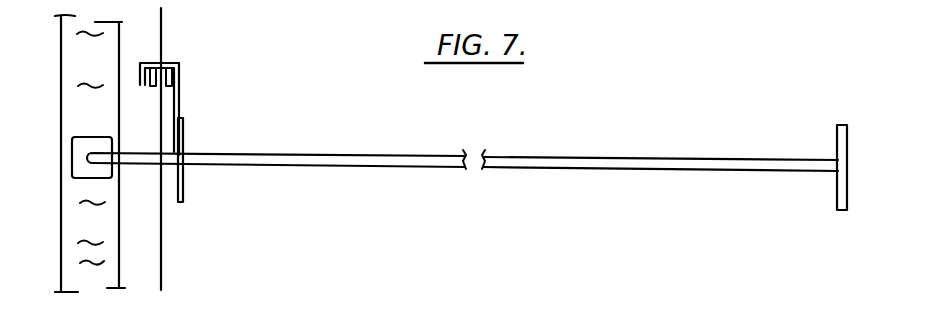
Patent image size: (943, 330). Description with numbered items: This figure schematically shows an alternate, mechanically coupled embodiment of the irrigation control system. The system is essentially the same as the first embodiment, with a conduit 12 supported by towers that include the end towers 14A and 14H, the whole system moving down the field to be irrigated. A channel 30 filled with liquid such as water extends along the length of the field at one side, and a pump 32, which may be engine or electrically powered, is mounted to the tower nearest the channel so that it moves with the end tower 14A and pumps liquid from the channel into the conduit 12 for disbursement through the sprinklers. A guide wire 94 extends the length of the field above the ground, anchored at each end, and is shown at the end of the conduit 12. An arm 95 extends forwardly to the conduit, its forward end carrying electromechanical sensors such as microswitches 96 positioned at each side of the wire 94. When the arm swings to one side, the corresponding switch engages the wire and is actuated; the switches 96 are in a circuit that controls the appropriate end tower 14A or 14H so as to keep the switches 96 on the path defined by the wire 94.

The channel 30 is at (67, 70).
The pump 32 is at (77, 157).
The conduit 12 is at (490, 154).
The wire 94 is at (162, 262).
The arm 95 is at (180, 106).
The microswitches 96 is at (148, 88).
The end tower 14A is at (189, 189).
The end tower 14H is at (848, 190).